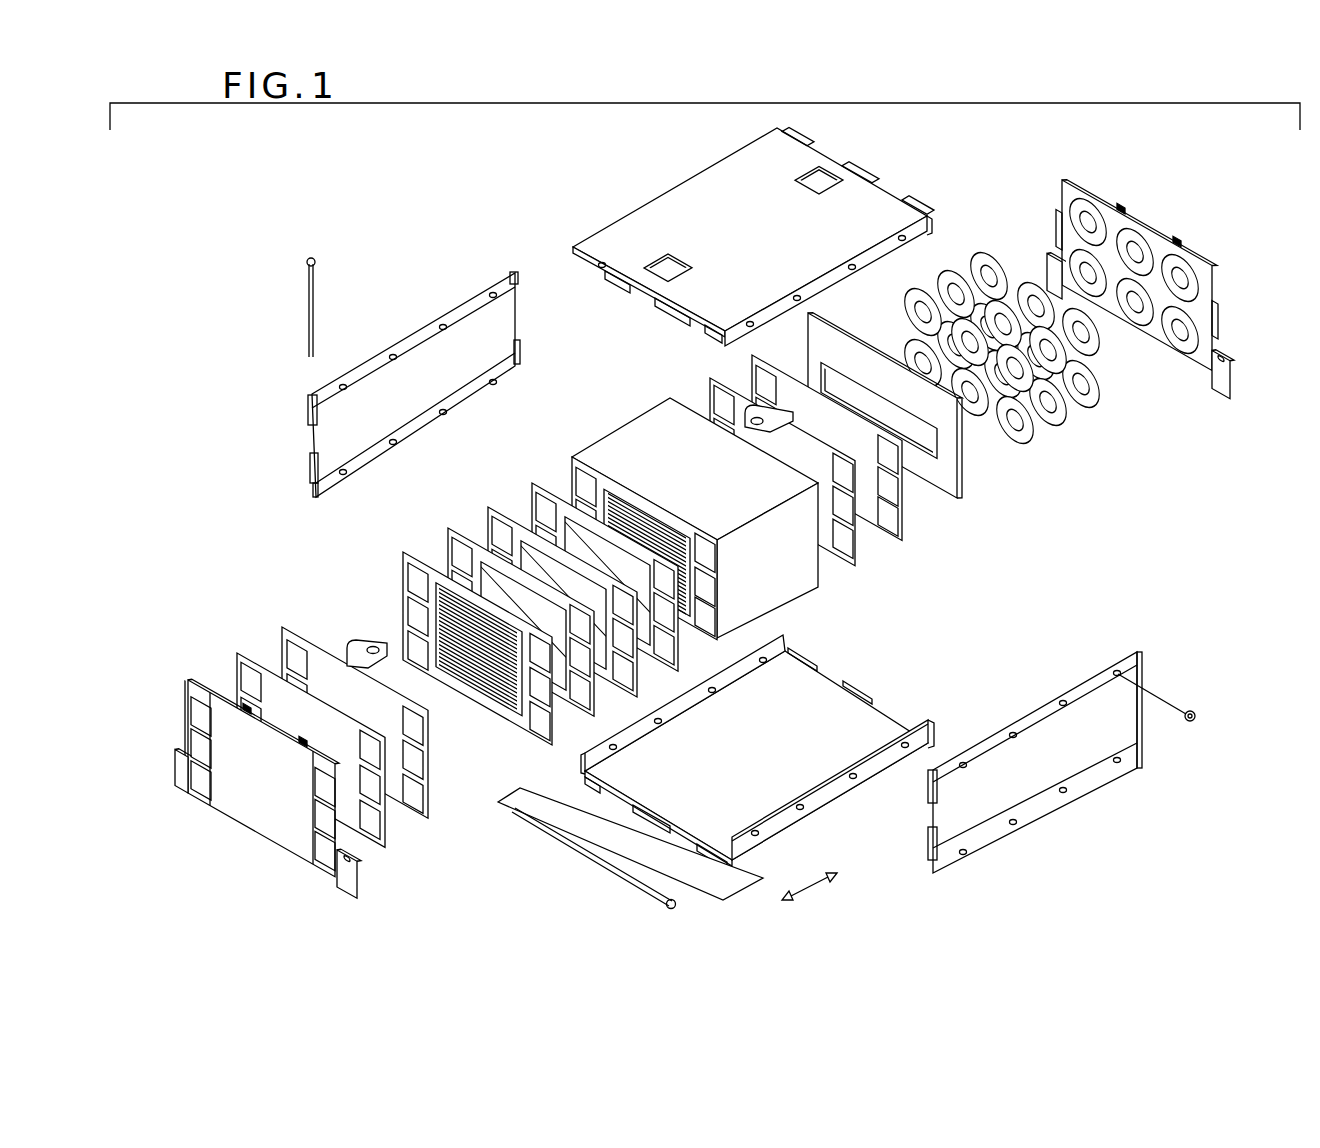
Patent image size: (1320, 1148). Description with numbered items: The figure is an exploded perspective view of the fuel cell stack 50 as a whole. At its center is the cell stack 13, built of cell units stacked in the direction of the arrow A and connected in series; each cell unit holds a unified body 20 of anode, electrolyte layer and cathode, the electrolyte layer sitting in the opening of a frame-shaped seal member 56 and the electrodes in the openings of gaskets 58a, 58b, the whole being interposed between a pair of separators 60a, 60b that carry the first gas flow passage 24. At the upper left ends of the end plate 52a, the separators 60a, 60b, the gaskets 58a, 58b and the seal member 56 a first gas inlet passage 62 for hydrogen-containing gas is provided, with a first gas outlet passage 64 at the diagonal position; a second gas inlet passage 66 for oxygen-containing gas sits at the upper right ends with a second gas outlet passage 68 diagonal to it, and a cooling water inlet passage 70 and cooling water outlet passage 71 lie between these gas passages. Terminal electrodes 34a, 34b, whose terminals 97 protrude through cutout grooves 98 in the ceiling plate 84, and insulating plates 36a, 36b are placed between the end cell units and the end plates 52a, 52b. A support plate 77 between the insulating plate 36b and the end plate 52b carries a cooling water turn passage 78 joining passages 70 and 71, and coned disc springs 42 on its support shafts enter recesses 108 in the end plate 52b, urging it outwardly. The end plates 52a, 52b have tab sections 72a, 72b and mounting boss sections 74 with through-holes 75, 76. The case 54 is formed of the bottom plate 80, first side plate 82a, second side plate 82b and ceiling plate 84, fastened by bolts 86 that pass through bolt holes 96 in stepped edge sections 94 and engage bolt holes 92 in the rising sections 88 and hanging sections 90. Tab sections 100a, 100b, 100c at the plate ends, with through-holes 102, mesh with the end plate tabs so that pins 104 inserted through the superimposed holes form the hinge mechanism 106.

The cell stack 13 is at (650, 432).
The unified body 20 is at (534, 790).
The first gas flow passage 24 is at (640, 515).
The terminal electrode 34a is at (425, 770).
The terminal electrode 34b is at (856, 560).
The insulating plate 36a is at (268, 680).
The insulating plate 36b is at (903, 540).
The coned disc springs 42 is at (982, 255).
The fuel cell stack 50 is at (702, 637).
The end plate 52a is at (262, 820).
The end plate 52b is at (1139, 284).
The case 54 is at (752, 237).
The frame-shaped seal member 56 is at (492, 507).
The gasket 58a is at (450, 530).
The gasket 58b is at (538, 482).
The separator 60a is at (520, 730).
The separator 60b is at (686, 638).
The first gas inlet passage 62 is at (583, 470).
The first gas outlet passage 64 is at (716, 620).
The second gas inlet passage 66 is at (706, 542).
The second gas outlet passage 68 is at (405, 638).
The cooling water inlet passage 70 is at (712, 390).
The cooling water outlet passage 71 is at (896, 485).
The tab sections 72a is at (1108, 200).
The tab sections 72b is at (1218, 318).
The mounting boss sections 74 is at (1052, 268).
The through-holes 75 is at (1178, 232).
The through-holes 76 is at (1232, 352).
The support plate 77 is at (945, 438).
The cooling water turn passage 78 is at (909, 400).
The bottom plate 80 is at (757, 747).
The first side plate 82a is at (370, 403).
The second side plate 82b is at (1040, 790).
The ceiling plate 84 is at (668, 205).
The bolts 86 is at (1195, 712).
The rising sections 88 is at (700, 698).
The hanging sections 90 is at (815, 290).
The bolt holes 92 is at (750, 322).
The stepped edge sections 94 is at (460, 312).
The bolt holes 96 is at (510, 278).
The terminals 97 is at (760, 430).
The cutout grooves 98 is at (688, 268).
The tab sections 100a is at (872, 692).
The tab sections 100b is at (308, 392).
The tab sections 100c is at (598, 247).
The through-holes 102 is at (310, 452).
The pins 104 is at (309, 290).
The hinge mechanism 106 is at (522, 855).
The recesses 108 is at (1070, 205).